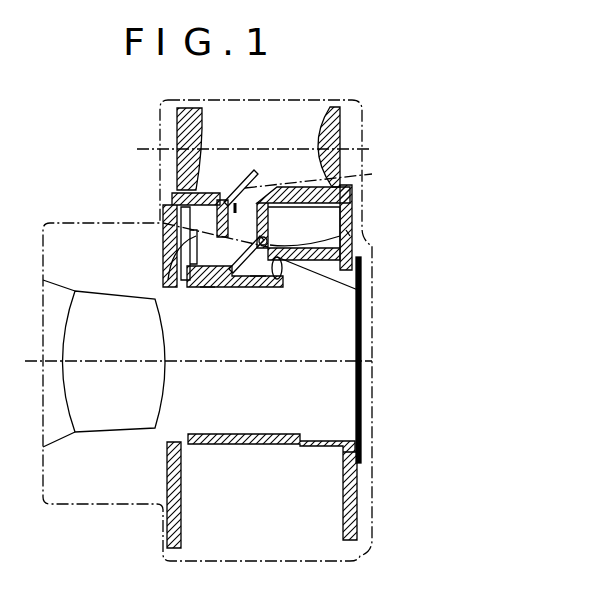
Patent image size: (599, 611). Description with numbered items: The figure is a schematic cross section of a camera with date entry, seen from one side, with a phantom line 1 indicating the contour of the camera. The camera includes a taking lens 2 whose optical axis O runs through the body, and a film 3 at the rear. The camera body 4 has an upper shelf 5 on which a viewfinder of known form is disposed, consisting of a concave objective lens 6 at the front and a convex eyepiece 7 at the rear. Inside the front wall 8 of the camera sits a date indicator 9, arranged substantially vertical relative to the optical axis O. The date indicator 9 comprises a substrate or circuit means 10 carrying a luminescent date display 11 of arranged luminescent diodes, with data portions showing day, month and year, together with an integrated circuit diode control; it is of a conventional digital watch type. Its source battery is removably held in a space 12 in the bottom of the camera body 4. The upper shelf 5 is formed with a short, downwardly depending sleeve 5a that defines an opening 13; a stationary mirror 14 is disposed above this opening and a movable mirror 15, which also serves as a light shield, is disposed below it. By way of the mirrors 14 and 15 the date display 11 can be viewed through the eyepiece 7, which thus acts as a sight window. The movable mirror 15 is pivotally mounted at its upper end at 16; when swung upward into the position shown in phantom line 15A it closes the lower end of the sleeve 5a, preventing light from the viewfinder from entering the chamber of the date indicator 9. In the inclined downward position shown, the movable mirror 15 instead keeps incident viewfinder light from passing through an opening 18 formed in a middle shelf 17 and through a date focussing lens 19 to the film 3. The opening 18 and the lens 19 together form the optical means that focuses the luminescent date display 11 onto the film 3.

The phantom line 1 is at (373, 447).
The taking lens 2 is at (120, 432).
The film 3 is at (358, 330).
The camera body 4 is at (354, 244).
The upper shelf 5 is at (352, 210).
The sleeve 5a is at (270, 223).
The concave objective lens 6 is at (202, 113).
The convex eyepiece 7 is at (320, 133).
The front wall 8 is at (162, 212).
The date indicator 9 is at (220, 198).
The substrate 10 is at (181, 236).
The date display 11 is at (168, 287).
The space 12 is at (268, 507).
The opening 13 is at (226, 200).
The stationary mirror 14 is at (252, 168).
The movable mirror 15 is at (235, 287).
The phantom line position of movable mirror 15A is at (178, 266).
The pivot 16 is at (350, 233).
The middle shelf 17 is at (205, 288).
The opening 18 is at (258, 287).
The date focussing lens 19 is at (280, 280).
The optical axis O is at (223, 362).